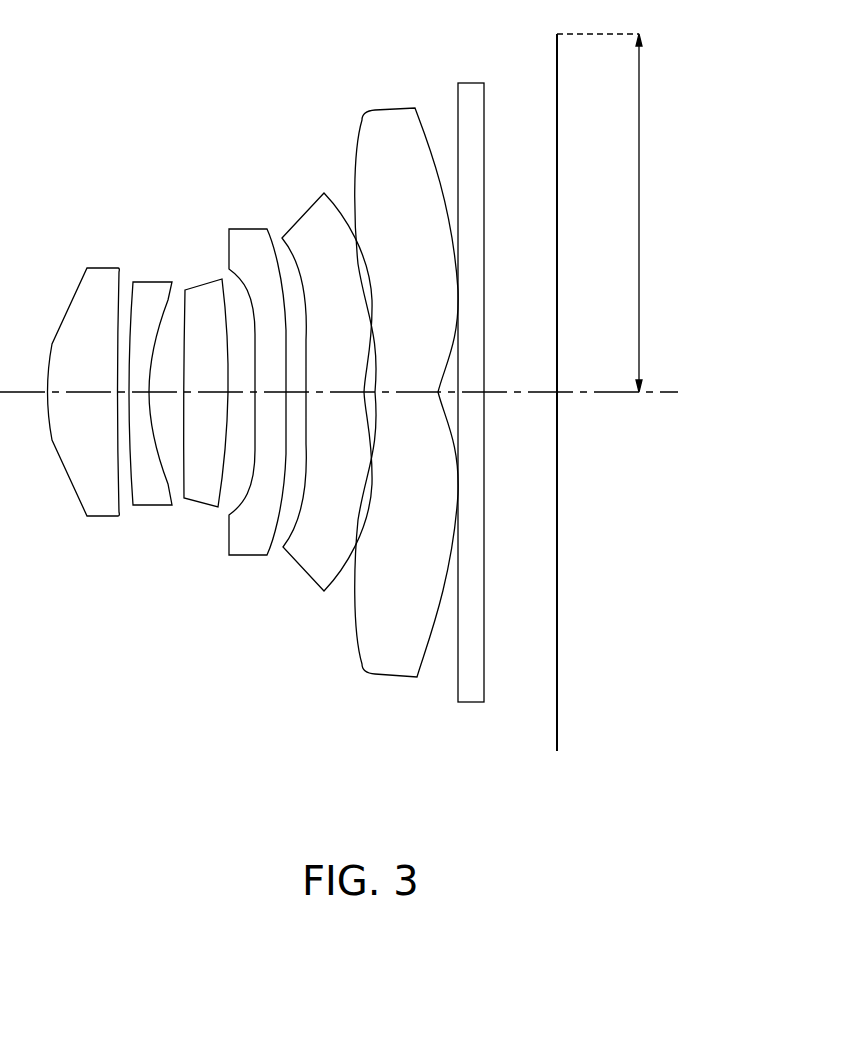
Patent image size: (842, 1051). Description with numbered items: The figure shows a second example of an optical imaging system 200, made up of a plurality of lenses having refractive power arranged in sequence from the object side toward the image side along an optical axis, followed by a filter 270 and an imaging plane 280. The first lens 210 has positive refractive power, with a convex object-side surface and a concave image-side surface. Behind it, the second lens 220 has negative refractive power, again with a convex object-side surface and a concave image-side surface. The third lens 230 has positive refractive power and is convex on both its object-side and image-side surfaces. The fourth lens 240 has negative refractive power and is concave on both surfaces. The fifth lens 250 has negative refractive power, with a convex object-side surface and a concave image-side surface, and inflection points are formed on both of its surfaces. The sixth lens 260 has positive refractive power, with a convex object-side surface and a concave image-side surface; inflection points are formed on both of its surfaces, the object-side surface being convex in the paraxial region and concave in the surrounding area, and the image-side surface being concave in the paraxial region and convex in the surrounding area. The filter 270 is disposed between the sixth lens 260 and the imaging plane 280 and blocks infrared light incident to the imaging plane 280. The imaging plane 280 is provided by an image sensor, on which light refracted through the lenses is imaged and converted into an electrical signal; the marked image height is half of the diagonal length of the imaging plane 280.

The optical imaging system 200 is at (170, 92).
The first lens 210 is at (103, 517).
The second lens 220 is at (152, 505).
The third lens 230 is at (198, 502).
The fourth lens 240 is at (248, 557).
The fifth lens 250 is at (300, 568).
The sixth lens 260 is at (390, 677).
The filter 270 is at (475, 703).
The imaging plane 280 is at (557, 717).